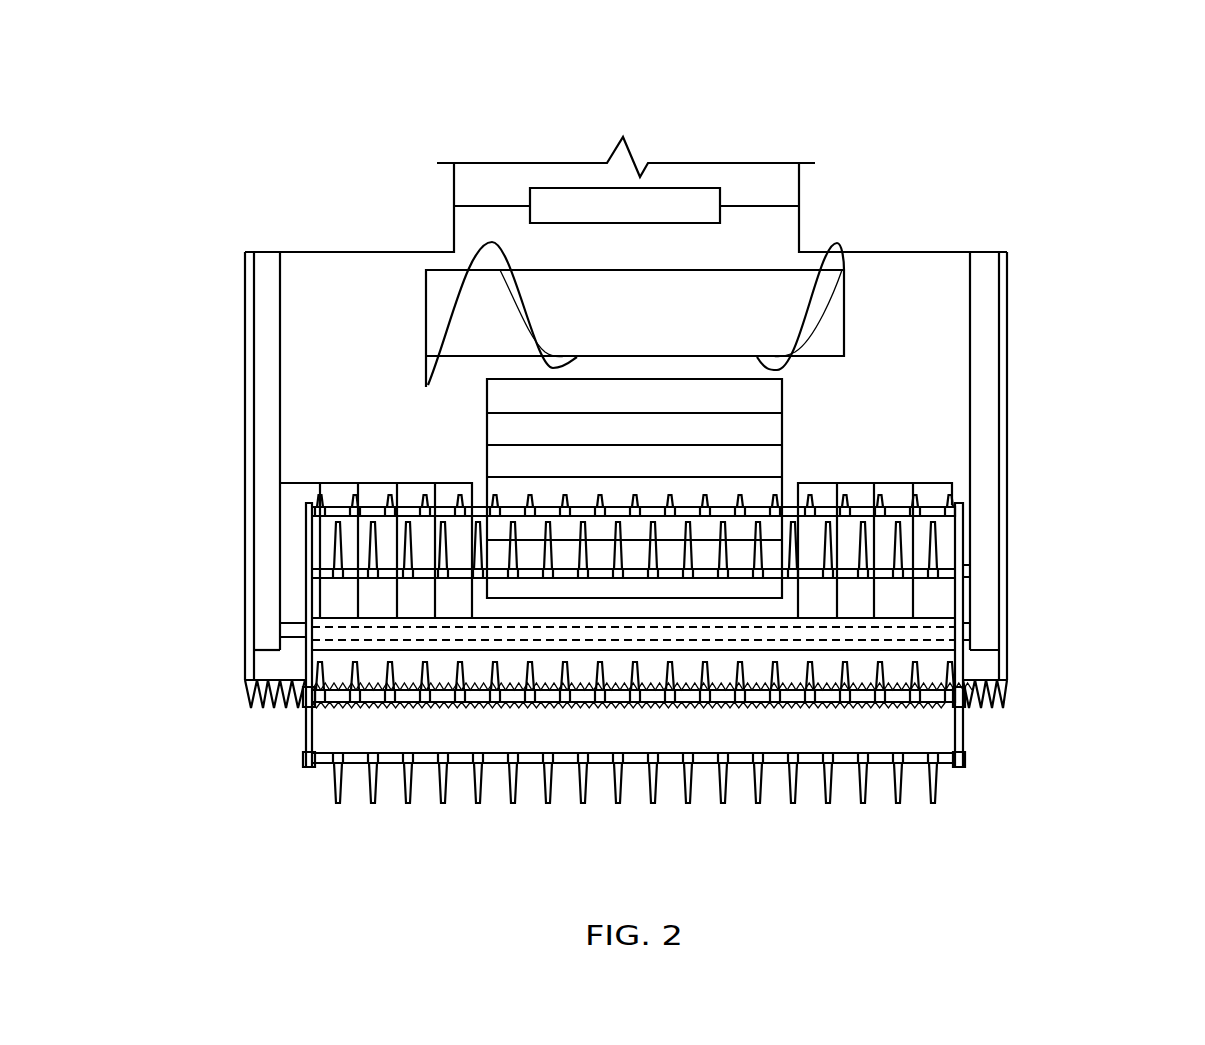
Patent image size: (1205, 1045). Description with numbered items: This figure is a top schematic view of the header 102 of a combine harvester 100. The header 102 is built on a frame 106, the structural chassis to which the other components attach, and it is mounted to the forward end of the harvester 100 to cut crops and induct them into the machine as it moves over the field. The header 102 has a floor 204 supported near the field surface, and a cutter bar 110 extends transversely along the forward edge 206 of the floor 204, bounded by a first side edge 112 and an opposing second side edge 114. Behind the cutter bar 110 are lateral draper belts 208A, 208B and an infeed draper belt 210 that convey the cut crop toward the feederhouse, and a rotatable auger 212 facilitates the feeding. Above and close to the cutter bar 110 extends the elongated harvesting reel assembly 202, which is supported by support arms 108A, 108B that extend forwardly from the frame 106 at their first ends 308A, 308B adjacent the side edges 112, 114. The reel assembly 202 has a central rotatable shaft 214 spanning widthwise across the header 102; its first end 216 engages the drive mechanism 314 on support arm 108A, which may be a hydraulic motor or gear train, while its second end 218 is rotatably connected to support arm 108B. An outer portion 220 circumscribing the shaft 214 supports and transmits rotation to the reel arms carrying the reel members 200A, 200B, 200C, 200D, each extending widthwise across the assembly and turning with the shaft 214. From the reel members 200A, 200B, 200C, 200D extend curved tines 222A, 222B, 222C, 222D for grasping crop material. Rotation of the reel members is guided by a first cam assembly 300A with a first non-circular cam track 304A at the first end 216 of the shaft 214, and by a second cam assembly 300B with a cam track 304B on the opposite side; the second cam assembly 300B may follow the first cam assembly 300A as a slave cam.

The combine harvester 100 is at (690, 86).
The header 102 is at (698, 202).
The frame 106 is at (933, 252).
The support arm 108A is at (266, 330).
The support arm 108B is at (978, 318).
The cutter bar 110 is at (1013, 697).
The first side edge 112 is at (245, 350).
The second side edge 114 is at (1010, 318).
The reel member 200A is at (353, 567).
The reel member 200B is at (367, 507).
The reel member 200C is at (503, 697).
The reel member 200D is at (733, 758).
The harvesting reel assembly 202 is at (952, 825).
The floor 204 is at (925, 412).
The forward edge 206 is at (1015, 660).
The lateral draper belt 208A is at (296, 497).
The lateral draper belt 208B is at (932, 494).
The infeed draper belt 210 is at (765, 397).
The rotatable auger 212 is at (773, 285).
The central rotatable shaft 214 is at (293, 640).
The first end 216 is at (270, 612).
The second end 218 is at (1040, 625).
The outer portion 220 is at (855, 643).
The tine 222A is at (430, 500).
The tine 222B is at (412, 520).
The tine 222C is at (530, 663).
The tine 222D is at (647, 777).
The first cam assembly 300A is at (290, 790).
The second cam assembly 300B is at (990, 752).
The first non-circular cam track 304A is at (303, 730).
The cam track 304B is at (962, 722).
The first end 308A is at (235, 262).
The first end 308B is at (1005, 255).
The drive mechanism 314 is at (247, 637).